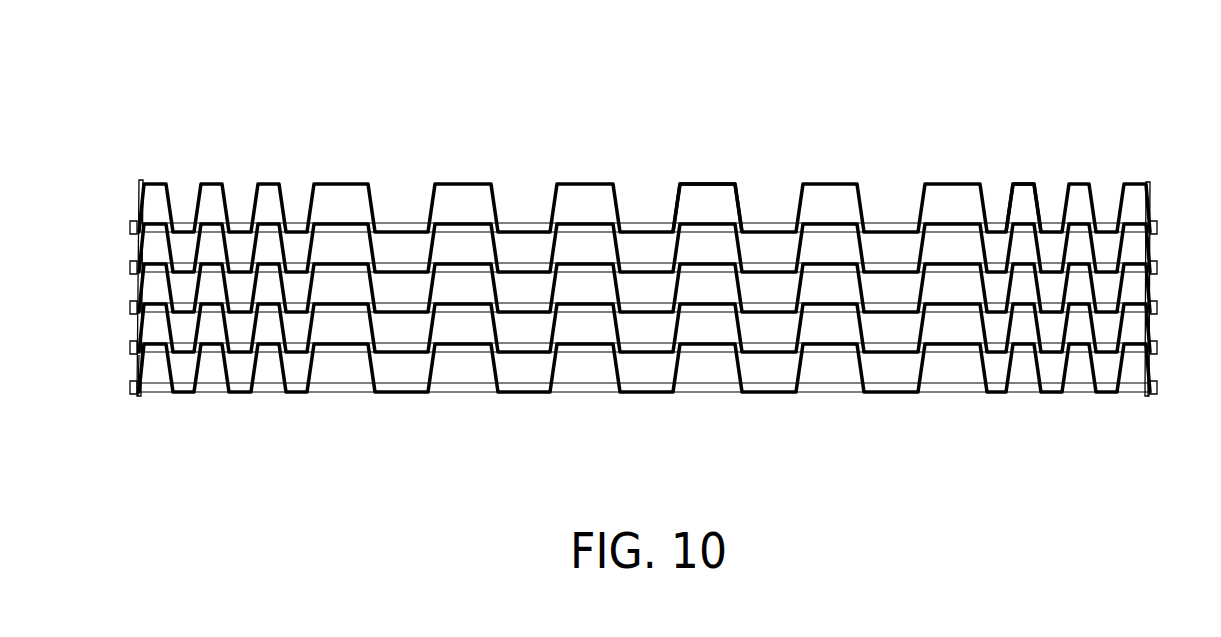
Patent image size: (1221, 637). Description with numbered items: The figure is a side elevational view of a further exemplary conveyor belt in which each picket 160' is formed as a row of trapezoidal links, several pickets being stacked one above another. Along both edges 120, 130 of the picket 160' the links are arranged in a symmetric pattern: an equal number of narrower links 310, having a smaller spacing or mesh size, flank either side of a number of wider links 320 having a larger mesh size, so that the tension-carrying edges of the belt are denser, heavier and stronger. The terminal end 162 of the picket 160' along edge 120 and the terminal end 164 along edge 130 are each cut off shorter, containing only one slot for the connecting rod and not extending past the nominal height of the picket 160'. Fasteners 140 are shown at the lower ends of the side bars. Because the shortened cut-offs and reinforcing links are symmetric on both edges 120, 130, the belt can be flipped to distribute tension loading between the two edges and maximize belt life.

The edge 120 is at (131, 186).
The edge 130 is at (1160, 168).
The fastener 140 is at (135, 376).
The picket 160' is at (644, 182).
The terminal end 162 is at (141, 362).
The terminal end 164 is at (1147, 362).
The link 310 is at (1026, 185).
The link 320 is at (712, 185).